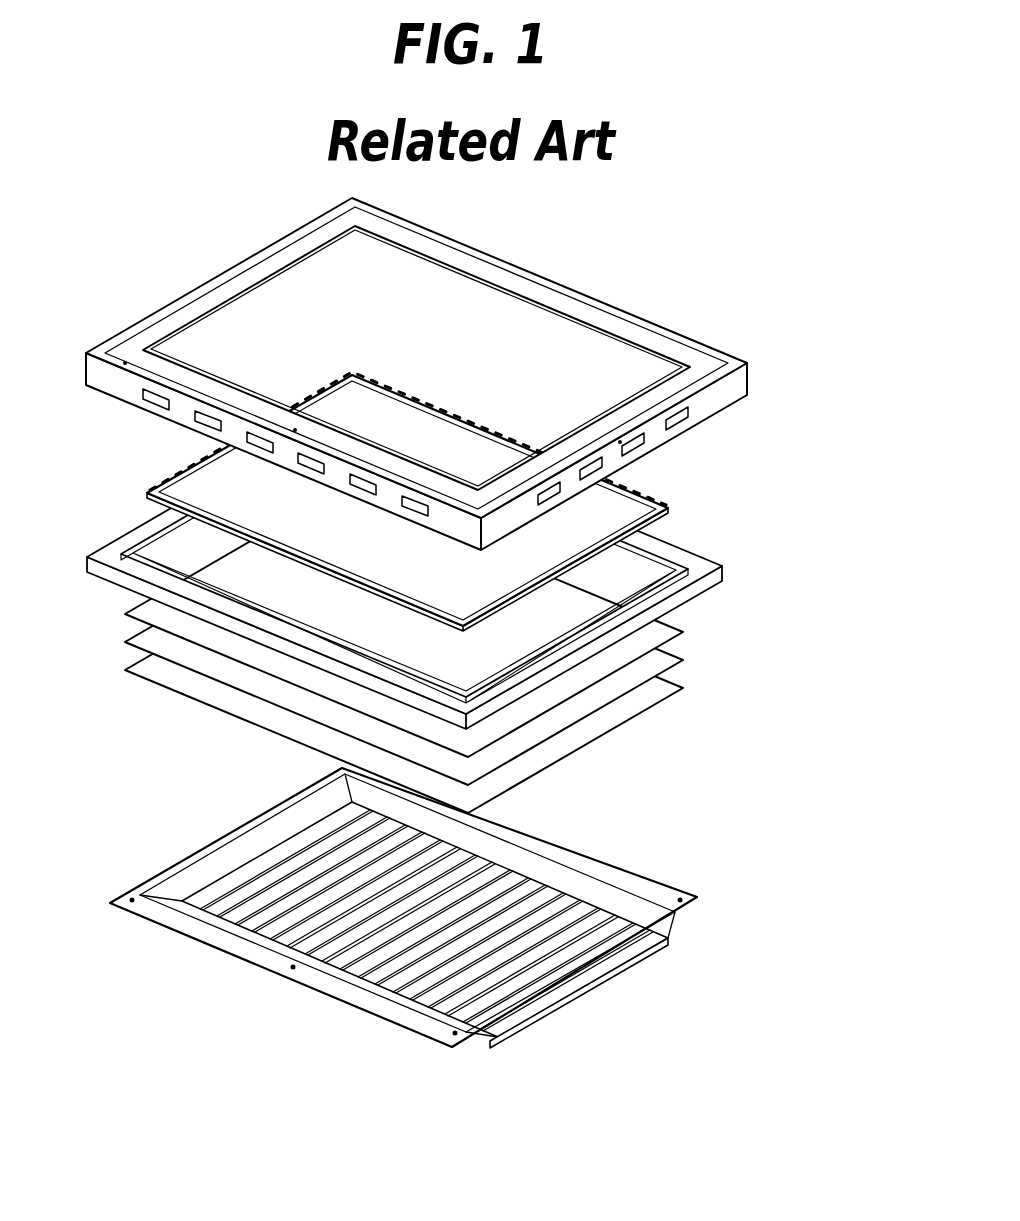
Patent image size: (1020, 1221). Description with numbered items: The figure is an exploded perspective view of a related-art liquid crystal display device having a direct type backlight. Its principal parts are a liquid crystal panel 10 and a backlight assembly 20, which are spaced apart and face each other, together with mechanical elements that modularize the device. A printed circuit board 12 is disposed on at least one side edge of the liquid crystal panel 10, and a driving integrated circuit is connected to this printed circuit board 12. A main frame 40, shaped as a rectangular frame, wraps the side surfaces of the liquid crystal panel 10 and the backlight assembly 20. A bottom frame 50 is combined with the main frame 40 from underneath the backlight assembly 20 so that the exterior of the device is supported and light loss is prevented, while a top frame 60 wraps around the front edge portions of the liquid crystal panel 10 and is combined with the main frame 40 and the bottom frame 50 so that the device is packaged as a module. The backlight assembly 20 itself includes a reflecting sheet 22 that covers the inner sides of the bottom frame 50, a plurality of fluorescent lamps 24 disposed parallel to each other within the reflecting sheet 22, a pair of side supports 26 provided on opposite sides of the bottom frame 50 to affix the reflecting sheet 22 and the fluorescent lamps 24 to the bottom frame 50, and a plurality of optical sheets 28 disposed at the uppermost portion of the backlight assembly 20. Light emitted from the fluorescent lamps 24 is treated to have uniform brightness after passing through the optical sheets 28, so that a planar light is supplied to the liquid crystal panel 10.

The liquid crystal panel 10 is at (468, 643).
The printed circuit board 12 is at (603, 481).
The backlight assembly 20 is at (478, 873).
The reflecting sheet 22 is at (603, 892).
The fluorescent lamps 24 is at (493, 873).
The side supports 26 is at (210, 860).
The optical sheets 28 is at (712, 617).
The main frame 40 is at (710, 568).
The bottom frame 50 is at (562, 1003).
The top frame 60 is at (745, 382).